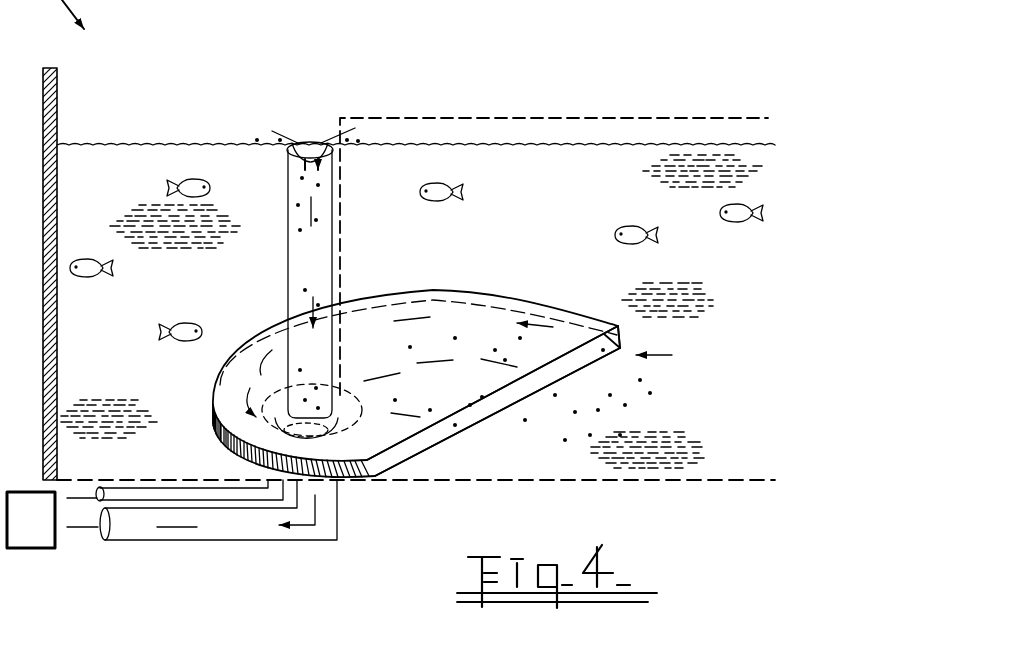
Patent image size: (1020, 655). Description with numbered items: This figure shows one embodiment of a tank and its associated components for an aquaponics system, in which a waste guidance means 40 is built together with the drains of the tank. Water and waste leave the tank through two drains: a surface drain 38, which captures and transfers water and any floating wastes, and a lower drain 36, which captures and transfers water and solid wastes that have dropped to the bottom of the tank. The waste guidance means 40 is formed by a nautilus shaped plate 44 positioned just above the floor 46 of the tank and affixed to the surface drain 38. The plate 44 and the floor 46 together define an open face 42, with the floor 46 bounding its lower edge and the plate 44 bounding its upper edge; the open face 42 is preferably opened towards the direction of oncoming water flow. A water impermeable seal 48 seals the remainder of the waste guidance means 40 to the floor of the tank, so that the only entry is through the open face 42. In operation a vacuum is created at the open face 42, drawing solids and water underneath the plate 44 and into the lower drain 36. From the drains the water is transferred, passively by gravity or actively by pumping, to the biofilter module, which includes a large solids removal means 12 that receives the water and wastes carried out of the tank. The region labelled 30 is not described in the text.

The large solids removal means 12 is at (44, 534).
The tank 30 is at (588, 118).
The lower drain 36 is at (338, 446).
The surface drain 38 is at (315, 147).
The waste guidance means 40 is at (531, 412).
The open face 42 is at (612, 352).
The nautilus shaped plate 44 is at (488, 308).
The floor 46 is at (433, 443).
The water impermeable seal 48 is at (228, 455).